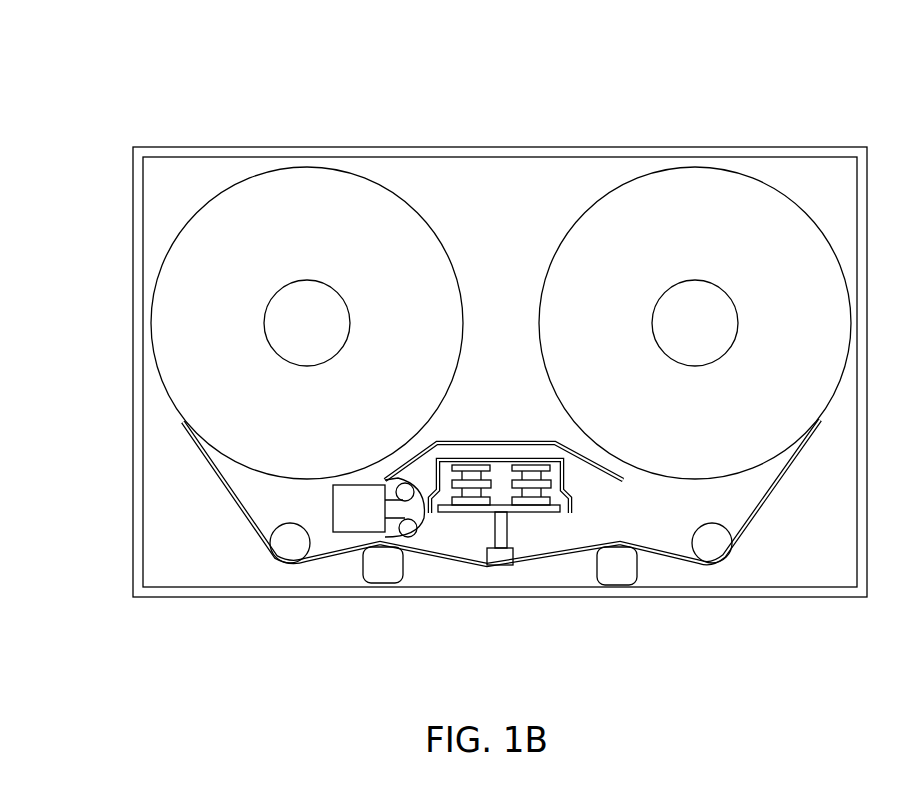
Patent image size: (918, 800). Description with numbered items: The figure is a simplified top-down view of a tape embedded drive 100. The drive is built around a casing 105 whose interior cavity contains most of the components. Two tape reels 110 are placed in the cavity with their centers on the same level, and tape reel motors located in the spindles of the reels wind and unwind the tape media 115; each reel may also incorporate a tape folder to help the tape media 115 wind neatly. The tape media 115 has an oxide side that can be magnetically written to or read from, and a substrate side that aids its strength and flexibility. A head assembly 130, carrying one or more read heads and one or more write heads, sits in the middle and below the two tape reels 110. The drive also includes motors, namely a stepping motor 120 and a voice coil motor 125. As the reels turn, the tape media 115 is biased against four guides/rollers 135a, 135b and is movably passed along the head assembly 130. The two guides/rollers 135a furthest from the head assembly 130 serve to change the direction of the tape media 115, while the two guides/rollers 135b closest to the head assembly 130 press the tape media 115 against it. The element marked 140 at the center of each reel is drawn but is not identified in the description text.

The tape embedded drive 100 is at (132, 84).
The casing 105 is at (533, 147).
The tape reels 110 is at (290, 168).
The tape media 115 is at (235, 505).
The stepping motor 120 is at (343, 532).
The voice coil motor 125 is at (473, 512).
The head assembly 130 is at (500, 565).
The guides/rollers 135a is at (287, 545).
The guides/rollers 135b is at (383, 573).
The reel hub 140 is at (335, 292).